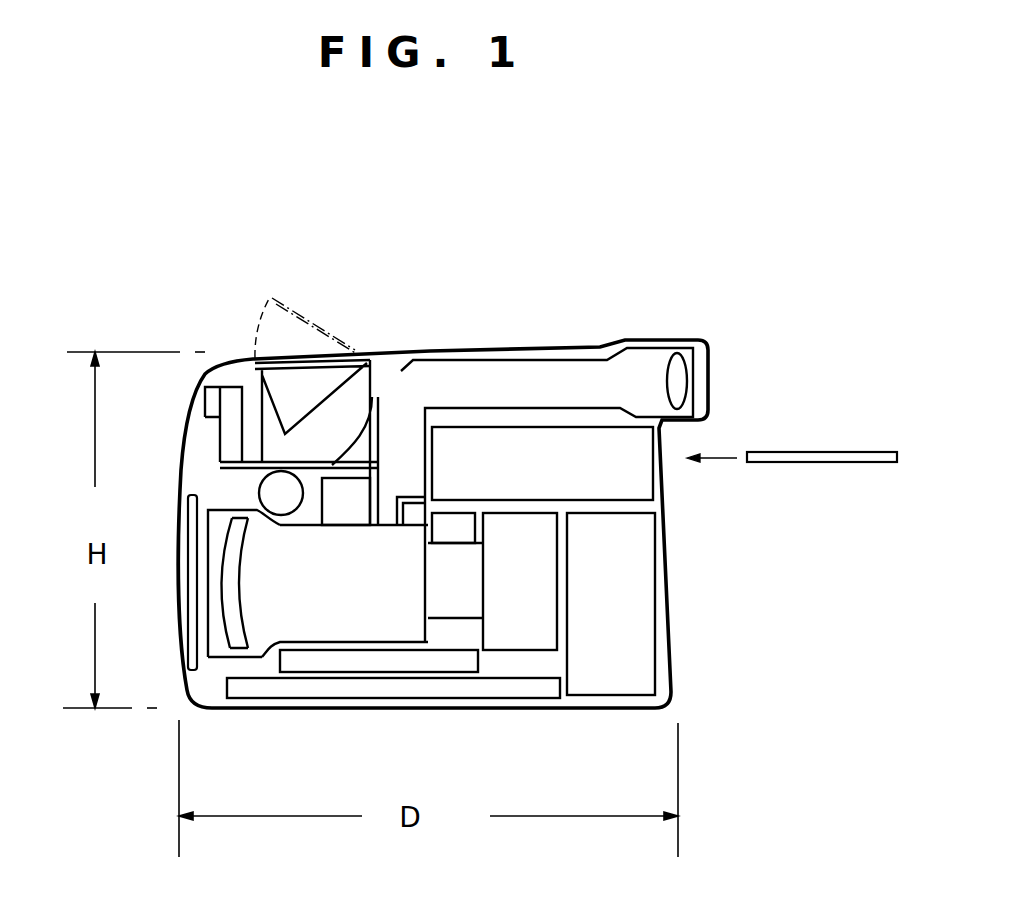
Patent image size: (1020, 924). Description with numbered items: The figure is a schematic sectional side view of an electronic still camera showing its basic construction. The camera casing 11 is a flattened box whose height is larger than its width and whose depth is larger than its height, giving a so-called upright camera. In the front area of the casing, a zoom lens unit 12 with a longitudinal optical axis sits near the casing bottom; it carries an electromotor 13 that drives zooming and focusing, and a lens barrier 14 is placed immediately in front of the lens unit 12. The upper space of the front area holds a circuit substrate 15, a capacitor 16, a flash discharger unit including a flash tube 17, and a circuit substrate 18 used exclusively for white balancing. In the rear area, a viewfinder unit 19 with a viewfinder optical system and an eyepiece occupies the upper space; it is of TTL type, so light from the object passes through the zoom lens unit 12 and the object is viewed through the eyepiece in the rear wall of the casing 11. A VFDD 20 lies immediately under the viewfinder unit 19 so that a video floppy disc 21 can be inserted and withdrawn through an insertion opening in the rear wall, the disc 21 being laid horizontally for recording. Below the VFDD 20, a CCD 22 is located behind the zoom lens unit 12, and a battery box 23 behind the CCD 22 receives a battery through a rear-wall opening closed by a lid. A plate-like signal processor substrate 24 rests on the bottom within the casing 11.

The camera casing 11 is at (512, 352).
The zoom lens unit 12 is at (252, 607).
The electromotor 13 is at (347, 510).
The lens barrier 14 is at (188, 576).
The circuit substrate 15 is at (375, 396).
The capacitor 16 is at (270, 498).
The flash tube 17 is at (315, 380).
The circuit substrate for white balancing 18 is at (220, 437).
The viewfinder unit 19 is at (577, 386).
The VFDD 20 is at (595, 462).
The video floppy disc 21 is at (803, 455).
The CCD 22 is at (527, 628).
The battery box 23 is at (623, 590).
The signal processor substrate 24 is at (453, 688).